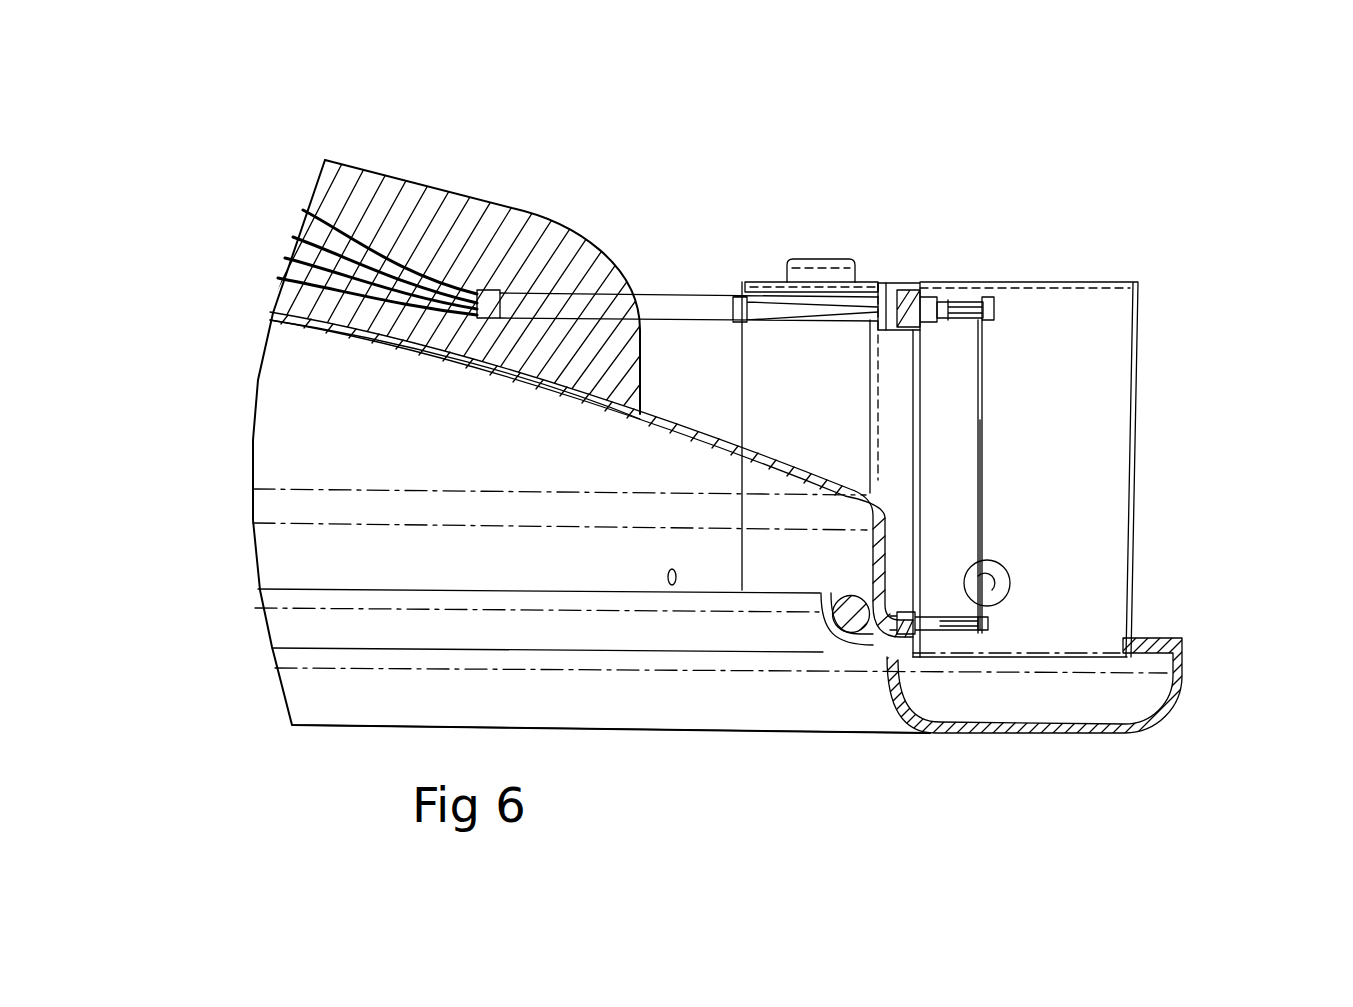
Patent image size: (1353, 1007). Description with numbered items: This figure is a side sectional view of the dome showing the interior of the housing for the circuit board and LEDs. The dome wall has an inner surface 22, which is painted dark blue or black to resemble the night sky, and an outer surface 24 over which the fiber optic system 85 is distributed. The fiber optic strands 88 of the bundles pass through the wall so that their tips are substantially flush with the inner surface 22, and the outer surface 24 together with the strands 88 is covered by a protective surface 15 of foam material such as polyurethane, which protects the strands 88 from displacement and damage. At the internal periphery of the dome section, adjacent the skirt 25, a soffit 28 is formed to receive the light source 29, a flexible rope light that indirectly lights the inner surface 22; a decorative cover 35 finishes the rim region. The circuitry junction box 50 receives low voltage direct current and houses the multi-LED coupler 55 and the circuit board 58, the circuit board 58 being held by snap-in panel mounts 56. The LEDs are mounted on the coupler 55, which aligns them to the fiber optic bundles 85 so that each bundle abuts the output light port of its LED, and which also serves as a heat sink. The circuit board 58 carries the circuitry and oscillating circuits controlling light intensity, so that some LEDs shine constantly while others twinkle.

The protective surface 15 is at (510, 207).
The inner surface 22 is at (417, 362).
The outer surface 24 is at (683, 416).
The skirt 25 is at (883, 577).
The soffit 28 is at (773, 632).
The light source 29 is at (850, 618).
The decorative cover 35 is at (1173, 713).
The circuitry junction box 50 is at (1137, 287).
The multi-LED coupler 55 is at (913, 313).
The snap-in panel mounts 56 is at (943, 633).
The circuit board 58 is at (982, 435).
The fiber optic system 85 is at (700, 296).
The fiber optic strands 88 is at (355, 236).